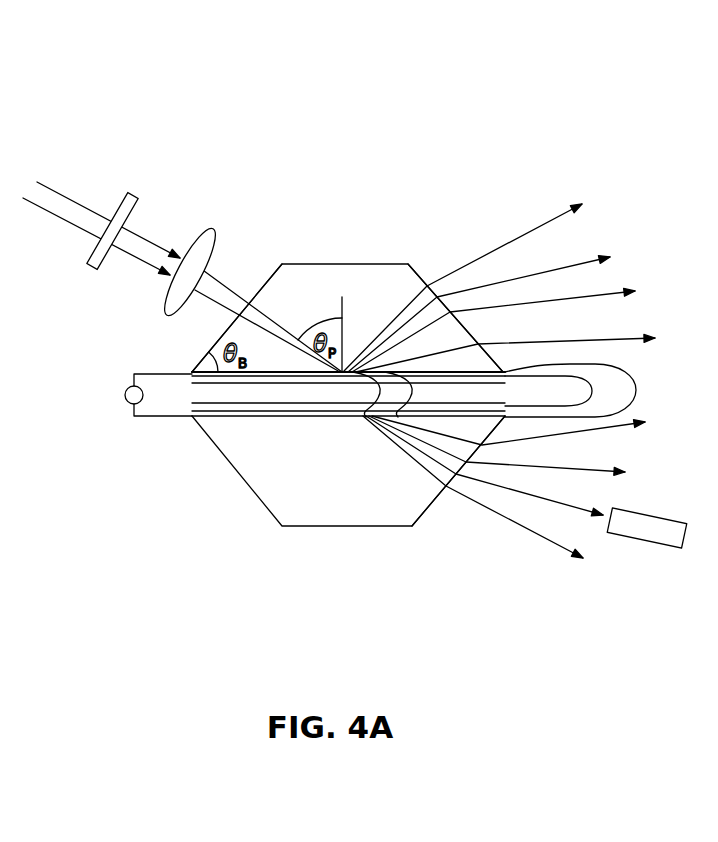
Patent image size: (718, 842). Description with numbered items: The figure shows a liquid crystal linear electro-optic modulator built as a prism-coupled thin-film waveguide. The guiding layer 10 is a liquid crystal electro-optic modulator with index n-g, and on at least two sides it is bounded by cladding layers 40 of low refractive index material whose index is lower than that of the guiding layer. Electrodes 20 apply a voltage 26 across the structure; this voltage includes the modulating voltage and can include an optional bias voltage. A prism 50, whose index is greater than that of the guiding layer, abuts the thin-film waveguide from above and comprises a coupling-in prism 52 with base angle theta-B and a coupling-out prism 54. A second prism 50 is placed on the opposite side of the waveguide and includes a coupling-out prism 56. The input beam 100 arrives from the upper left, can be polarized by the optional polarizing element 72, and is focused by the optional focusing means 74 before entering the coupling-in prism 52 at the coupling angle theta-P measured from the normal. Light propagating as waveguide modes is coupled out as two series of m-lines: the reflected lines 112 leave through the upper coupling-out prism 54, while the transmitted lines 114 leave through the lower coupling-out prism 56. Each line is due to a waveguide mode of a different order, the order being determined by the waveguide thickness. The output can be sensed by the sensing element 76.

The input beam 100 is at (92, 207).
The polarizing element 72 is at (133, 213).
The focusing means 74 is at (220, 230).
The prism 50 is at (352, 248).
The coupling-in prism 52 is at (220, 338).
The coupling-out prism 54 is at (418, 275).
The coupling-out prism 56 is at (426, 516).
The voltage 26 is at (124, 395).
The guiding layer 10 is at (508, 396).
The cladding layers 40 is at (574, 406).
The electrodes 20 is at (624, 410).
The reflected lines 112 is at (558, 269).
The transmitted lines 114 is at (563, 507).
The sensing element 76 is at (657, 513).